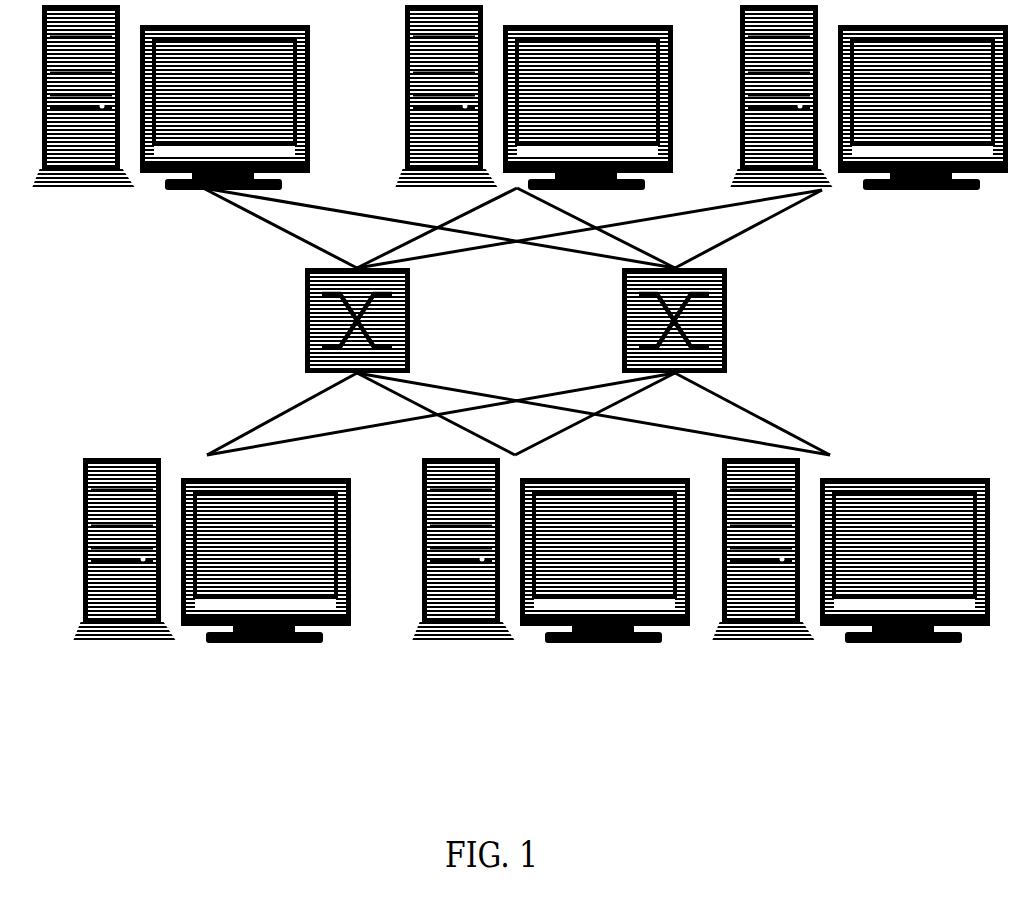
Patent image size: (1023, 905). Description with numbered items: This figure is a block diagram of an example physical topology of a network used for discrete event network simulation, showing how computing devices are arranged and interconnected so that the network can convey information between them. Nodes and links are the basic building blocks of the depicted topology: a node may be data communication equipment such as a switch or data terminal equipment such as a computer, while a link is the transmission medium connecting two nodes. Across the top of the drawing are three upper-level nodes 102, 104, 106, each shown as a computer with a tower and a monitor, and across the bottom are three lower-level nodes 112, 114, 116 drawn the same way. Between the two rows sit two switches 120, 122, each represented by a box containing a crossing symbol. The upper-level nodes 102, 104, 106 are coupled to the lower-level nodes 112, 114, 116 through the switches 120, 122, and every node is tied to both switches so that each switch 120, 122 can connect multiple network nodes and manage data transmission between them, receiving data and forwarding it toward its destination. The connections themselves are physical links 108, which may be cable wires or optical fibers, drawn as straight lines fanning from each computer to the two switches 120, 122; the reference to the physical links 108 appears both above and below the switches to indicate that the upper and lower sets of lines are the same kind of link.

The upper-level node 102 is at (170, 99).
The upper-level node 104 is at (533, 99).
The upper-level node 106 is at (868, 99).
The physical links 108 is at (747, 235).
The lower-level node 112 is at (211, 552).
The lower-level node 114 is at (550, 552).
The lower-level node 116 is at (850, 552).
The switch 120 is at (327, 321).
The switch 122 is at (709, 321).